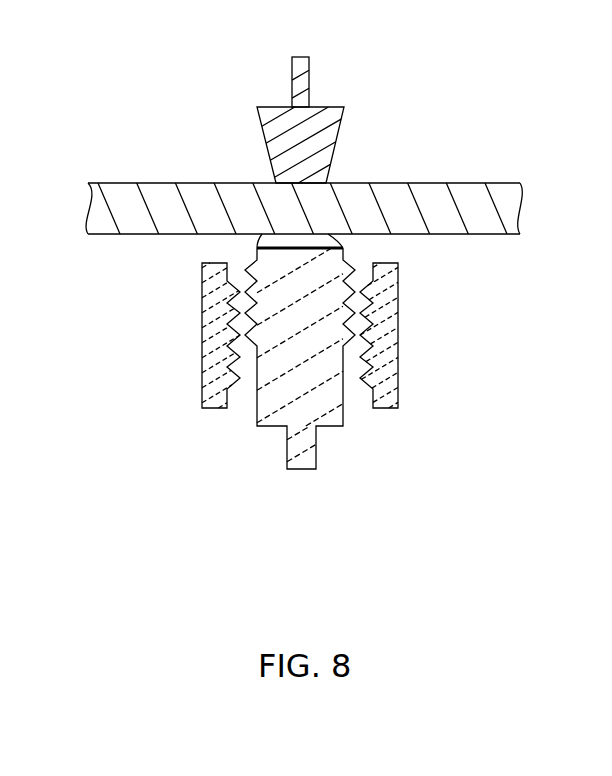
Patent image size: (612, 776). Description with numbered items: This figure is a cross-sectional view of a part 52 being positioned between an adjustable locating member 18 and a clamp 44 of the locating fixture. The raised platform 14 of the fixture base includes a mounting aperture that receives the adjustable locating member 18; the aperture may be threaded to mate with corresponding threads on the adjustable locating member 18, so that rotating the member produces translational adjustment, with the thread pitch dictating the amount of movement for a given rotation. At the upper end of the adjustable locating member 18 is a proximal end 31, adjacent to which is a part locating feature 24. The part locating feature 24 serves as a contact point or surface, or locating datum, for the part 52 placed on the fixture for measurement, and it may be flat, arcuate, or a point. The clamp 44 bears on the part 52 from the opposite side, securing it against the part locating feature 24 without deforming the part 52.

The clamp 44 is at (333, 83).
The part 52 is at (91, 210).
The part locating feature 24 is at (333, 238).
The proximal end 31 is at (245, 248).
The adjustable locating member 18 is at (267, 418).
The raised platform 14 is at (387, 349).